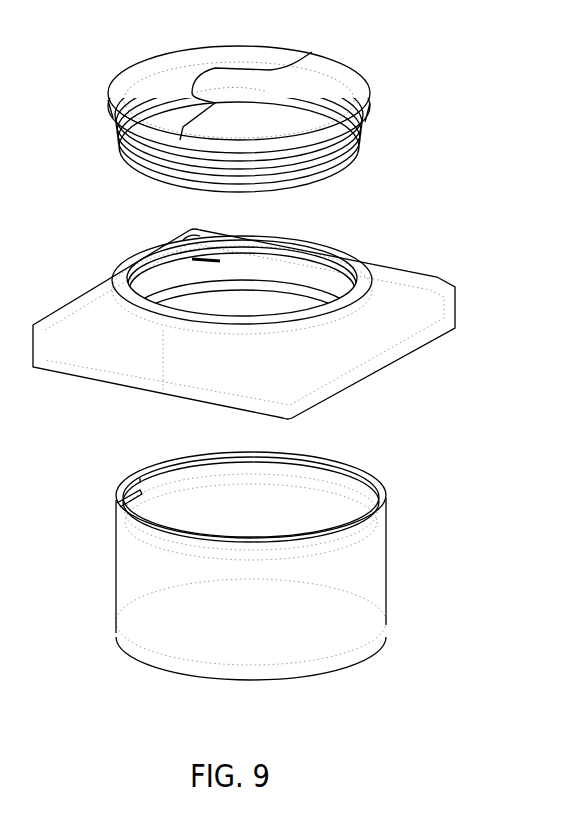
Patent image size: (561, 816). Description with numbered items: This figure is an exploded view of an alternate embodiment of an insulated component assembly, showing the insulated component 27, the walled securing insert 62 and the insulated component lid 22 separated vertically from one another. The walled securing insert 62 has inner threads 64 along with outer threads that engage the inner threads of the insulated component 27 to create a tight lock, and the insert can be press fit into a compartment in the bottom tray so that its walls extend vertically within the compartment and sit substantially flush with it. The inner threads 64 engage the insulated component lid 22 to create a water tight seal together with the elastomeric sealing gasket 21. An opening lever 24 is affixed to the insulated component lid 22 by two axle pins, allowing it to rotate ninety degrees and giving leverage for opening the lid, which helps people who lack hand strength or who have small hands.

The elastomeric sealing gasket 21 is at (289, 106).
The insulated component lid 22 is at (289, 80).
The opening lever 24 is at (228, 58).
The walled securing insert 62 is at (282, 320).
The inner threads 64 is at (312, 256).
The insulated component 27 is at (348, 609).